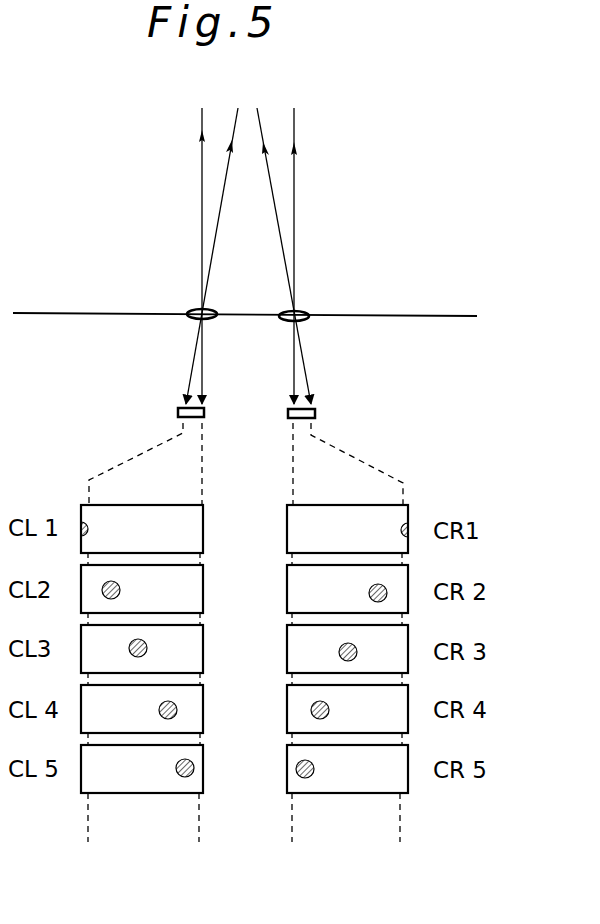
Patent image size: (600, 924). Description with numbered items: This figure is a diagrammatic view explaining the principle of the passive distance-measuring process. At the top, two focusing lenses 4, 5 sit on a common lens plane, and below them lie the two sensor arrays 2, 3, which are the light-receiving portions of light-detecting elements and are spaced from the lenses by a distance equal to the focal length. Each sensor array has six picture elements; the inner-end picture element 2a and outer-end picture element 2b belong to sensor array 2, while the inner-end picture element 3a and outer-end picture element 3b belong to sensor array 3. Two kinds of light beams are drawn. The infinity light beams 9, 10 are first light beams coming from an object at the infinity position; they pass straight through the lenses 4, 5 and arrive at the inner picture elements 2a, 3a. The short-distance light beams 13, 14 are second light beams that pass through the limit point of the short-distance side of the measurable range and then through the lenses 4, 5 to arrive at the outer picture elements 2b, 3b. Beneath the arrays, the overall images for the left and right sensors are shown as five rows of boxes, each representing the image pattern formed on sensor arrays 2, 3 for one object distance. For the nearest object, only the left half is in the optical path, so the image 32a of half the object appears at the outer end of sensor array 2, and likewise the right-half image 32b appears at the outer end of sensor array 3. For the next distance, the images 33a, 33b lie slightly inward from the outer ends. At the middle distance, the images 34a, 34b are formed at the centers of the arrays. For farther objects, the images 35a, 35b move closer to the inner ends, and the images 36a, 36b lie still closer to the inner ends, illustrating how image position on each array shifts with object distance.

The sensor array 2 is at (174, 409).
The sensor array 3 is at (320, 413).
The focusing lens 4 is at (200, 310).
The focusing lens 5 is at (300, 311).
The infinity light beam 9 is at (201, 170).
The infinity light beam 10 is at (295, 184).
The short-distance light beam 13 is at (222, 200).
The short-distance light beam 14 is at (281, 238).
The picture element 2a is at (204, 460).
The picture element 2b is at (86, 494).
The picture element 3a is at (290, 478).
The picture element 3b is at (406, 498).
The image of object 32a is at (89, 529).
The image of object 33a is at (120, 590).
The image of object 34a is at (147, 647).
The image of object 35a is at (159, 709).
The image of object 36a is at (176, 768).
The image of object 32b is at (400, 530).
The image of object 33b is at (369, 592).
The image of object 34b is at (339, 651).
The image of object 35b is at (330, 710).
The image of object 36b is at (315, 769).